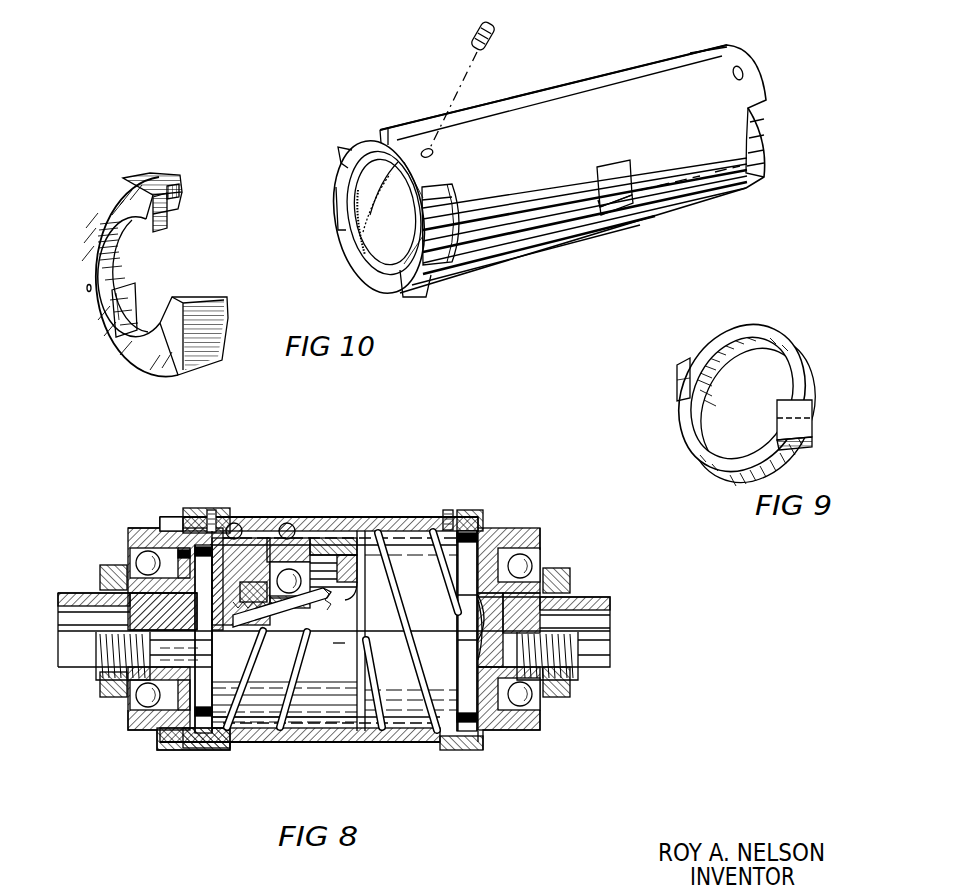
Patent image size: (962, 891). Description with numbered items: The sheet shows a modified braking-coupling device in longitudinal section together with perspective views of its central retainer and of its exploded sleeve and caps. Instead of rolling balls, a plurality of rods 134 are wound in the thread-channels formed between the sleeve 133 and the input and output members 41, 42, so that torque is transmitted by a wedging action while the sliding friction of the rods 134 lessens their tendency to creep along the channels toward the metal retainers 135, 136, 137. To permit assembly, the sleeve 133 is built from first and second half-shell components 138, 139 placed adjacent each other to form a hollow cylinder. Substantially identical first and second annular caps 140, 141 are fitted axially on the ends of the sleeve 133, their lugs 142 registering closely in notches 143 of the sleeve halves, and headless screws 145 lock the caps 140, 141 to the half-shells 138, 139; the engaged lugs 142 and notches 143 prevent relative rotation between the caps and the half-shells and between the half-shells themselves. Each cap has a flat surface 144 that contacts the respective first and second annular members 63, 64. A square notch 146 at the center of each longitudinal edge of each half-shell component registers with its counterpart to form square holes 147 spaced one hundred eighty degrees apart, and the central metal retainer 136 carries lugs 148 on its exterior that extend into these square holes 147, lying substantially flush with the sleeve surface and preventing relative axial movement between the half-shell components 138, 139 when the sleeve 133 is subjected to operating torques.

In FIG. 8, the input member 41 is at (241, 658).
In FIG. 8, the output member 42 is at (445, 631).
In FIG. 8, the first annular member 63 is at (134, 528).
In FIG. 8, the second annular member 64 is at (527, 535).
In FIG. 10, the sleeve 133 is at (398, 97).
In FIG. 8, the sleeve 133 is at (330, 745).
In FIG. 8, the rods 134 is at (253, 677).
In FIG. 10, the metal retainer 135 is at (360, 269).
In FIG. 8, the metal retainer 135 is at (127, 720).
In FIG. 9, the central metal retainer 136 is at (784, 352).
In FIG. 8, the central metal retainer 136 is at (352, 678).
In FIG. 8, the metal retainer 137 is at (541, 726).
In FIG. 10, the first half-shell component 138 is at (535, 95).
In FIG. 8, the first half-shell component 138 is at (356, 518).
In FIG. 10, the second half-shell component 139 is at (592, 237).
In FIG. 8, the second half-shell component 139 is at (266, 746).
In FIG. 10, the first annular cap 140 is at (140, 178).
In FIG. 8, the first annular cap 140 is at (196, 512).
In FIG. 8, the second annular cap 141 is at (469, 515).
In FIG. 10, the lugs 142 is at (180, 192).
In FIG. 10, the notches 143 is at (440, 213).
In FIG. 10, the flat surface 144 is at (88, 288).
In FIG. 8, the flat surface 144 is at (186, 514).
In FIG. 10, the headless screws 145 is at (470, 32).
In FIG. 8, the headless screws 145 is at (449, 510).
In FIG. 10, the square notch 146 is at (598, 195).
In FIG. 10, the square holes 147 is at (626, 180).
In FIG. 10, the lugs 148 is at (617, 177).
In FIG. 9, the lugs 148 is at (678, 388).
In FIG. 8, the lugs 148 is at (338, 642).